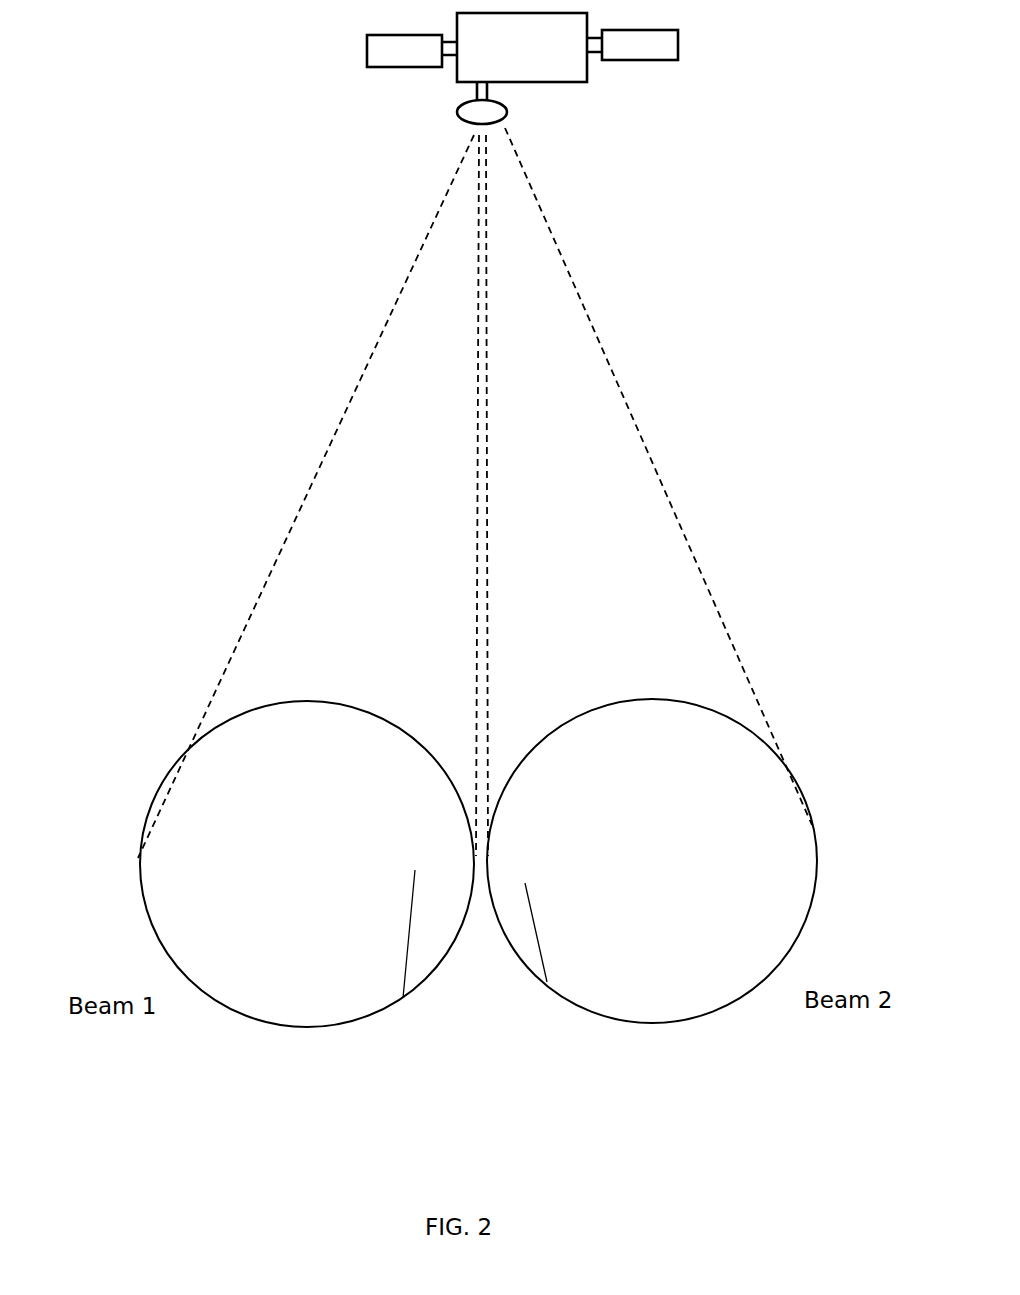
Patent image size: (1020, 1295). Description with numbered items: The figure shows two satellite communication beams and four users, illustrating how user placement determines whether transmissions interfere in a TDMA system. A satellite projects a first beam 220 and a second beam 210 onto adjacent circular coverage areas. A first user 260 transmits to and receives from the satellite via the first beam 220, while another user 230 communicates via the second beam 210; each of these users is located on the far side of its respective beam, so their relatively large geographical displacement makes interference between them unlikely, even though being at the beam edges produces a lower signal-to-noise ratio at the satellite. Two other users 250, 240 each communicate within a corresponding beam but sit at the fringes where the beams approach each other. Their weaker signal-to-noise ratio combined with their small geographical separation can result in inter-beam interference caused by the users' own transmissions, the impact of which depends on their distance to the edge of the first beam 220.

The Beam 2 210 is at (700, 733).
The Beam 1 220 is at (270, 730).
The user Y1 230 is at (755, 890).
The user Y2 240 is at (547, 982).
The user X2 250 is at (405, 997).
The user X1 260 is at (177, 825).